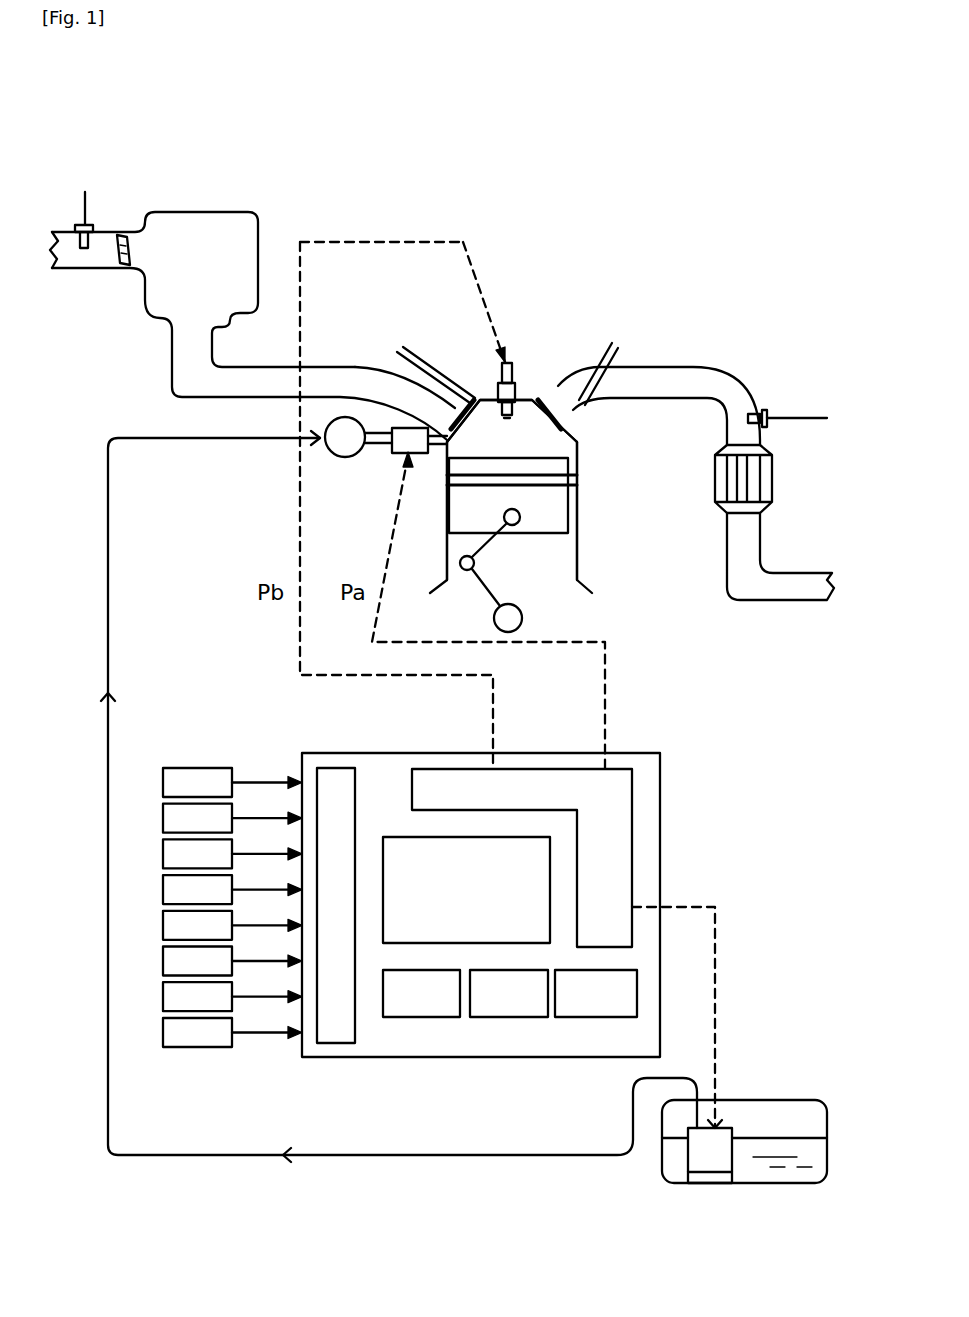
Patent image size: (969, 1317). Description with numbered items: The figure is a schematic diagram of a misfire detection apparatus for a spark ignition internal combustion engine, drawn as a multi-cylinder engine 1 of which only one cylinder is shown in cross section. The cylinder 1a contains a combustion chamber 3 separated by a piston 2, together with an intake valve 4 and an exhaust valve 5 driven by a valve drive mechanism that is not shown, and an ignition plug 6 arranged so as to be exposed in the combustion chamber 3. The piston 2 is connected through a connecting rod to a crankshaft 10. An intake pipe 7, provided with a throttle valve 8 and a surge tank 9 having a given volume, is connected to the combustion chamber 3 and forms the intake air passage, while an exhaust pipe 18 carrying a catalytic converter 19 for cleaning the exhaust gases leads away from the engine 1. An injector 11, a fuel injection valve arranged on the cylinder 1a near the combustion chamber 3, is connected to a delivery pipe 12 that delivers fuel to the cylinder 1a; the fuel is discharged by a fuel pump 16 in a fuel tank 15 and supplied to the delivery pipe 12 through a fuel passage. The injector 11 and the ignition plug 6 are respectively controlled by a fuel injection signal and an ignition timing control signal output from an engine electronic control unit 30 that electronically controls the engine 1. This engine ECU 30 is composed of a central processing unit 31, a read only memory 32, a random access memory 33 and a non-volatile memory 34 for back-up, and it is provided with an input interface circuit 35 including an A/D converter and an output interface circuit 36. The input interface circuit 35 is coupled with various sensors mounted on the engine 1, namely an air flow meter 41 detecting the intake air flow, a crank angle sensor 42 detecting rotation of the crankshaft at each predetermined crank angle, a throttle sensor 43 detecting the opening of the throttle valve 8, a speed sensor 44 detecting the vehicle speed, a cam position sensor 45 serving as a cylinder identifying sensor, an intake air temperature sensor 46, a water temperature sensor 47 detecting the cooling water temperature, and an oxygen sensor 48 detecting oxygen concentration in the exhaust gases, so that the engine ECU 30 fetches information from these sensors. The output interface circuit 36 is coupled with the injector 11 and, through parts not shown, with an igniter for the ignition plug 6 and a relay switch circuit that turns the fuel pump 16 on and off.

The multi-cylinder engine 1 is at (582, 273).
The cylinder 1a is at (575, 543).
The piston 2 is at (548, 517).
The combustion chamber 3 is at (632, 455).
The intake valve 4 is at (415, 357).
The exhaust valve 5 is at (594, 352).
The ignition plug 6 is at (500, 370).
The intake pipe 7 is at (228, 397).
The throttle valve 8 is at (122, 264).
The surge tank 9 is at (210, 212).
The crankshaft 10 is at (522, 605).
The injector 11 is at (398, 428).
The delivery pipe 12 is at (342, 458).
The fuel tank 15 is at (748, 1098).
The fuel pump 16 is at (688, 1153).
The exhaust pipe 18 is at (690, 367).
The catalytic converter 19 is at (772, 464).
The engine electronic control unit 30 is at (633, 753).
The central processing unit 31 is at (550, 862).
The read only memory 32 is at (440, 1017).
The random access memory 33 is at (505, 1017).
The non-volatile memory 34 is at (595, 1017).
The input interface circuit 35 is at (342, 767).
The output interface circuit 36 is at (445, 768).
The air flow meter 41 is at (232, 782).
The crank angle sensor 42 is at (232, 818).
The throttle sensor 43 is at (232, 853).
The speed sensor 44 is at (232, 889).
The cam position sensor 45 is at (232, 925).
The intake air temperature sensor 46 is at (94, 227).
The water temperature sensor 47 is at (232, 996).
The oxygen sensor 48 is at (764, 408).